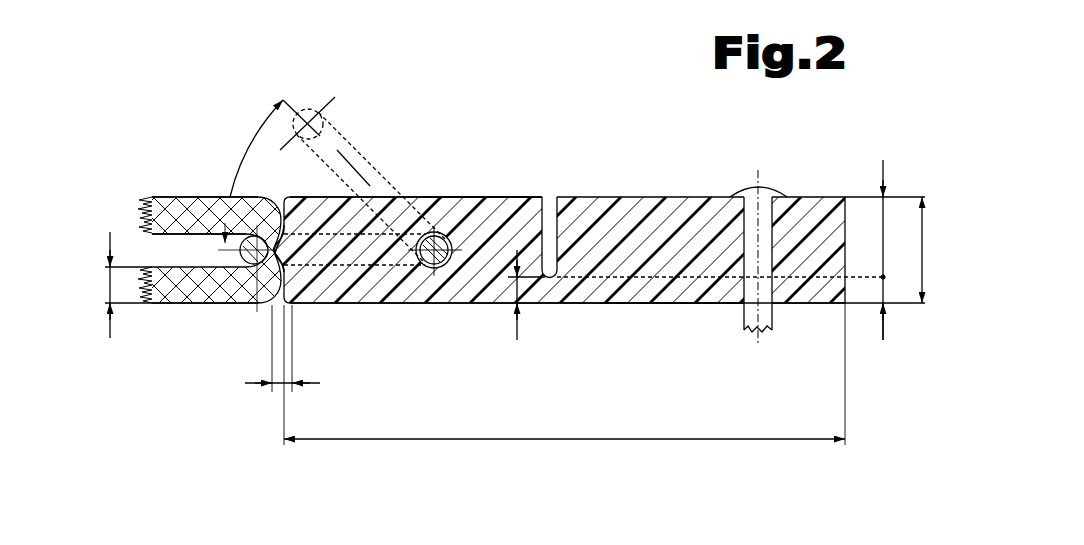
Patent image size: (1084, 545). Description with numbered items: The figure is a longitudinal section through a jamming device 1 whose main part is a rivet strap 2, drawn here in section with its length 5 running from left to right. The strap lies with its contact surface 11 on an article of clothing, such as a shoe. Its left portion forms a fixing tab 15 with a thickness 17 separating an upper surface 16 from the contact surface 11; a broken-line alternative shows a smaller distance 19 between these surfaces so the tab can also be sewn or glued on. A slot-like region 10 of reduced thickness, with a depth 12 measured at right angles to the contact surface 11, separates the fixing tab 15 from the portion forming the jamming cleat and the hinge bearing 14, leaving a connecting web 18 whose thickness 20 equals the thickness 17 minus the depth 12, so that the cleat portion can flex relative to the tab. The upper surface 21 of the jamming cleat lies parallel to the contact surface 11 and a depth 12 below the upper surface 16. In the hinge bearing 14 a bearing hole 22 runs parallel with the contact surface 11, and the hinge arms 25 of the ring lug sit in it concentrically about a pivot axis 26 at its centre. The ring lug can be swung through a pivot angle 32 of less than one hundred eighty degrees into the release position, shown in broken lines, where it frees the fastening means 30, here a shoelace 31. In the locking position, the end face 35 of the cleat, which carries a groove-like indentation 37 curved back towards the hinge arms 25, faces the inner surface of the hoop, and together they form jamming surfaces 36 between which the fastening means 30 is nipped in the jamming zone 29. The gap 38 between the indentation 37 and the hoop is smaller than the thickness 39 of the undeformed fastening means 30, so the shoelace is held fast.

The jamming device 1 is at (486, 456).
The rivet strap 2 is at (724, 312).
The length 5 is at (600, 439).
The region of reduced thickness 10 is at (548, 192).
The contact surface 11 is at (678, 306).
The depth 12 is at (884, 237).
The hinge bearing 14 is at (430, 194).
The fixing tab 15 is at (808, 222).
The upper surface 16 is at (718, 192).
The thickness 17 is at (923, 248).
The connecting web 18 is at (554, 306).
The distance 19 is at (888, 327).
The thickness of the connecting web 20 is at (515, 330).
The upper surface of the jamming cleat 21 is at (495, 196).
The bearing hole 22 is at (430, 265).
The hinge arms 25 is at (425, 232).
The pivot axis 26 is at (445, 275).
The jamming zone 29 is at (252, 289).
The fastening means 30 is at (150, 312).
The shoelace 31 is at (150, 198).
The pivot angle 32 is at (240, 169).
The end face 35 is at (270, 293).
The jamming surfaces 36 is at (286, 225).
The groove-like indentation 37 is at (257, 208).
The gap 38 is at (245, 383).
The thickness of the fastening means 39 is at (110, 332).